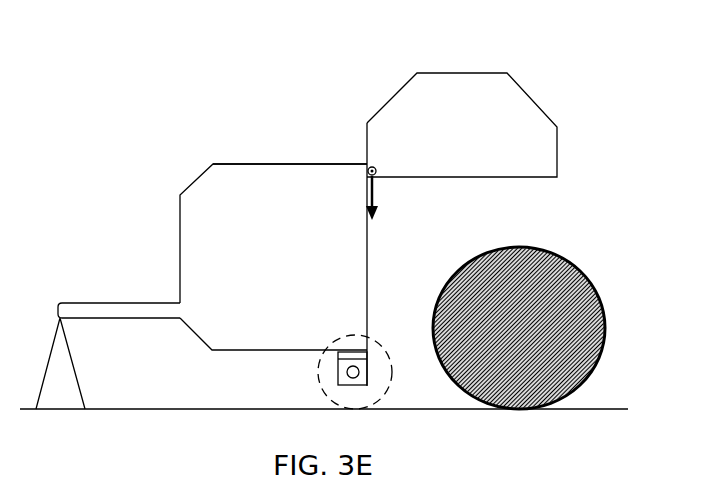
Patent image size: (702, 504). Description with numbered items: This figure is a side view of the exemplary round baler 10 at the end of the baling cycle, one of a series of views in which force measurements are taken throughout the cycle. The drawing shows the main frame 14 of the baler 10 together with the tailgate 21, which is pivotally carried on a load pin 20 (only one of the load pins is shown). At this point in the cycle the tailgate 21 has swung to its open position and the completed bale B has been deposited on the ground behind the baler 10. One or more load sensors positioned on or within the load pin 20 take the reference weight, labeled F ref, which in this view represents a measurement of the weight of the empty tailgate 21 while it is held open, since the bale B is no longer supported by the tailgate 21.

The round baler 10 is at (180, 166).
The main frame 14 is at (219, 163).
The load pin 20 is at (366, 171).
The tailgate 21 is at (528, 92).
The bale B is at (540, 314).